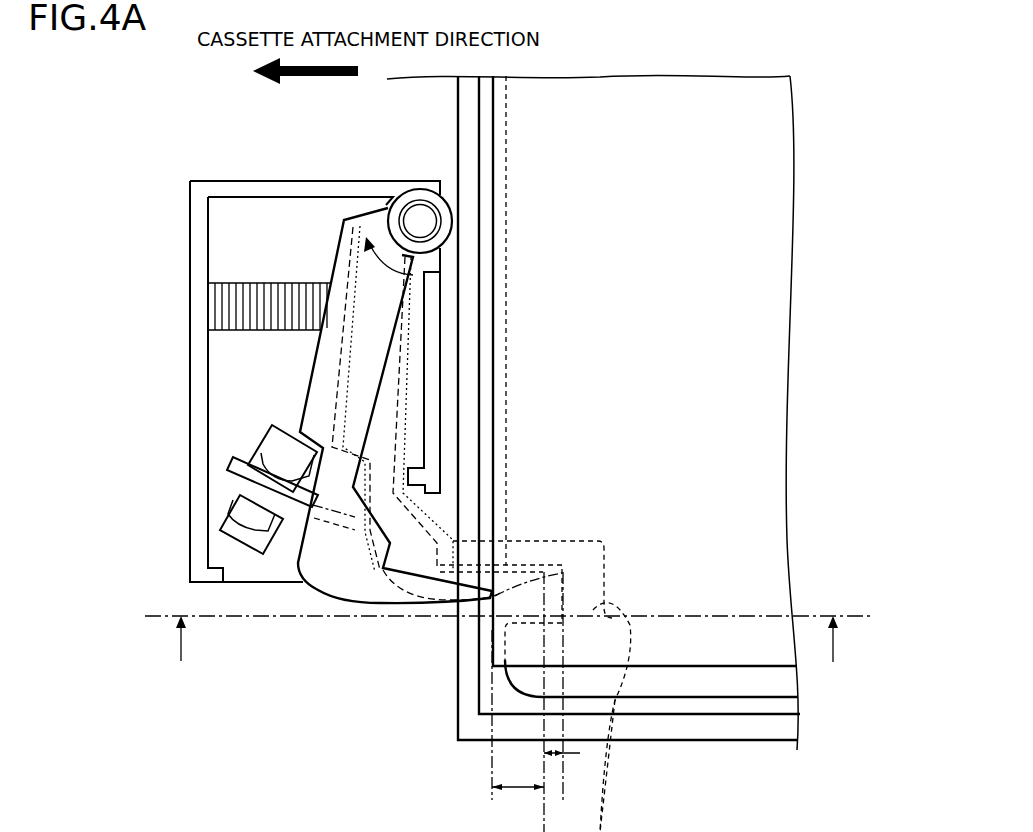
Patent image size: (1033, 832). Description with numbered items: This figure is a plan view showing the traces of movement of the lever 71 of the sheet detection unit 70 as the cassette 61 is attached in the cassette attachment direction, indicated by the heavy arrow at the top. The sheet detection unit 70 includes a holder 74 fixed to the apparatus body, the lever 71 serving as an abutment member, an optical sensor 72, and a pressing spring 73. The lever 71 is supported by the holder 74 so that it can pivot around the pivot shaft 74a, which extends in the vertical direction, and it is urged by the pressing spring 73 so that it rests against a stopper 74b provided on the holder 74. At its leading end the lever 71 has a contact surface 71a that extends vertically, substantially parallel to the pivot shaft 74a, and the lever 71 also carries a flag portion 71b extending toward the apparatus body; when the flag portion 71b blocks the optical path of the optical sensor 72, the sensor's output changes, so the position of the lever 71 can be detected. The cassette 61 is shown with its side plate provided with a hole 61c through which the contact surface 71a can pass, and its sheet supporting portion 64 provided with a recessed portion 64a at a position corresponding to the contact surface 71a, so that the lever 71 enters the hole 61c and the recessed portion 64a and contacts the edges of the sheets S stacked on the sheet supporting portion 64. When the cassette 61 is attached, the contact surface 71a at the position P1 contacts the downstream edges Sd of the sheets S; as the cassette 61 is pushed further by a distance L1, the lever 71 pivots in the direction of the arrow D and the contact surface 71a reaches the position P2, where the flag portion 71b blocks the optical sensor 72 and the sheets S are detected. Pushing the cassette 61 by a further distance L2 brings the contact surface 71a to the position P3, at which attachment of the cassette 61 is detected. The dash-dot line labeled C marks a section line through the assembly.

The sheet detection unit 70 is at (204, 169).
The lever 71 is at (312, 365).
The contact surface 71a is at (491, 592).
The flag portion 71b is at (302, 512).
The optical sensor 72 is at (237, 522).
The pressing spring 73 is at (239, 289).
The holder 74 is at (293, 188).
The pivot shaft 74a is at (420, 216).
The stopper 74b is at (418, 475).
The cassette 61 is at (455, 725).
The hole 61c is at (455, 621).
The sheet supporting portion 64 is at (687, 688).
The recessed portion 64a is at (618, 766).
The sheets S is at (727, 577).
The downstream edges Sd is at (490, 390).
The arrow D is at (388, 265).
The section line C is at (507, 642).
The position P1 is at (563, 697).
The position P2 is at (546, 702).
The position P3 is at (493, 726).
The distance L1 is at (576, 754).
The distance L2 is at (518, 775).